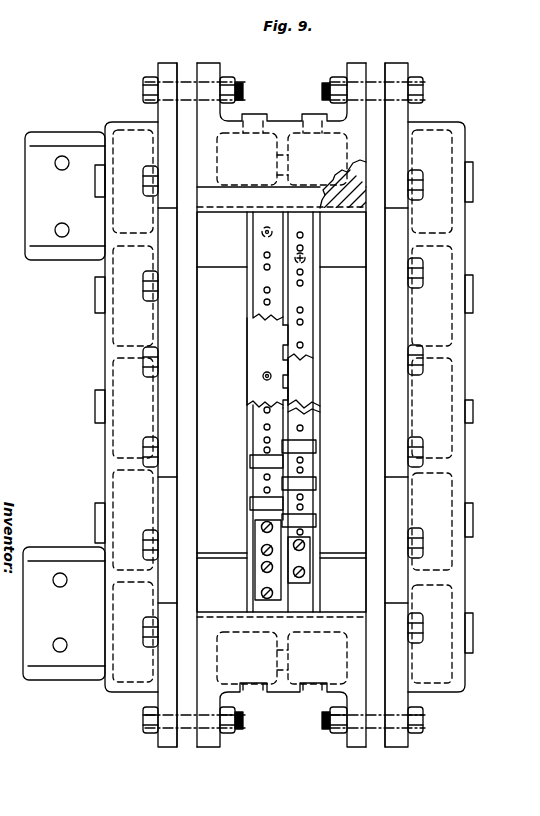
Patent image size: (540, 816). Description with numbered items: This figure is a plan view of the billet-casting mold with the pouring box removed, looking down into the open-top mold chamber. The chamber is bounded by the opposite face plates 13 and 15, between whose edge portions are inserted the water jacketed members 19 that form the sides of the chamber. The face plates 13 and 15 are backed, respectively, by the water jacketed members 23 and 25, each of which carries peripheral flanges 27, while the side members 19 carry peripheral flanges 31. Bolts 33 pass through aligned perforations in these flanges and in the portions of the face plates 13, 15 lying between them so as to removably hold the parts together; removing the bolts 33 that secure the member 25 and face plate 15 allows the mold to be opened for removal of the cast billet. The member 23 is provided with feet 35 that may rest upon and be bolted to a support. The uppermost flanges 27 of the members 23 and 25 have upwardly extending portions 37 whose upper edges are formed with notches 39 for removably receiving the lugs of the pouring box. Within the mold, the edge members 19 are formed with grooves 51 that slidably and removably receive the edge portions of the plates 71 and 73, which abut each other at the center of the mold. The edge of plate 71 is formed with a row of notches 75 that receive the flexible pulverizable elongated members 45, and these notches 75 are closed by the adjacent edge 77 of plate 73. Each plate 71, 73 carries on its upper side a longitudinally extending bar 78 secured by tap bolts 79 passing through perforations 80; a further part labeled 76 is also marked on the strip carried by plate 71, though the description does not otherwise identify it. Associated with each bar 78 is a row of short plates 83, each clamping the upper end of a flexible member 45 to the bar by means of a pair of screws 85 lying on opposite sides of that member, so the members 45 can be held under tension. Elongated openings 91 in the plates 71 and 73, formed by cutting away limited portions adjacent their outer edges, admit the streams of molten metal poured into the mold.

The face plate 13 is at (193, 418).
The face plate 15 is at (372, 420).
The water jacketed member 19 is at (283, 119).
The water jacketed member 23 is at (106, 334).
The water jacketed member 25 is at (465, 334).
The peripheral flange 27 is at (163, 63).
The peripheral flange 31 is at (209, 68).
The bolt 33 is at (143, 90).
The foot 35 is at (72, 131).
The upwardly extending portion 37 is at (170, 208).
The notch 39 is at (167, 336).
The flexible pulverizable elongated member 45 is at (255, 463).
The groove 51 is at (333, 183).
The plate 71 is at (212, 247).
The plate 73 is at (334, 300).
The notch 75 is at (283, 352).
The bus bar strip 76 is at (250, 238).
The edge 77 is at (288, 338).
The bar 78 is at (320, 234).
The tap bolt 79 is at (250, 309).
The perforation 80 is at (261, 232).
The plate 83 is at (250, 533).
The screw 85 is at (260, 553).
The elongated opening 91 is at (320, 301).